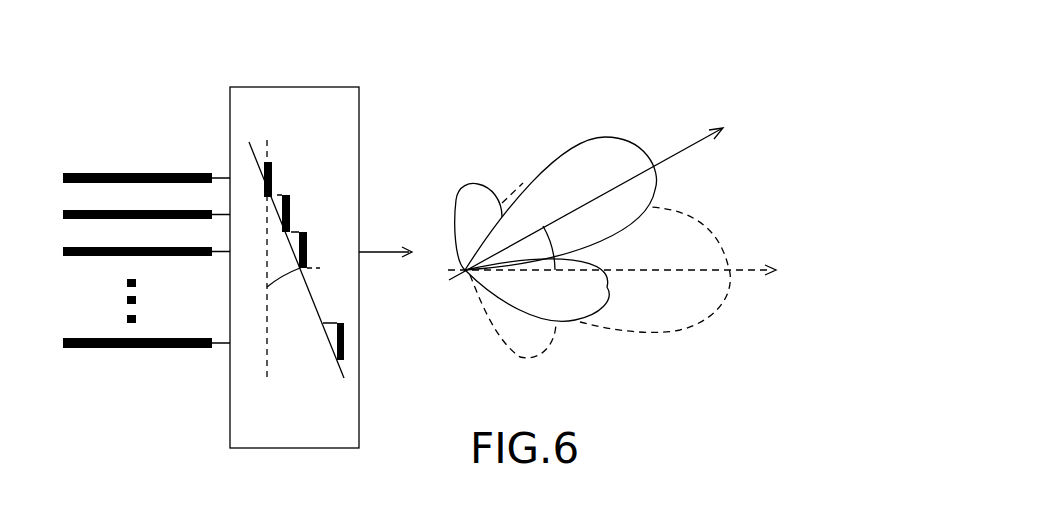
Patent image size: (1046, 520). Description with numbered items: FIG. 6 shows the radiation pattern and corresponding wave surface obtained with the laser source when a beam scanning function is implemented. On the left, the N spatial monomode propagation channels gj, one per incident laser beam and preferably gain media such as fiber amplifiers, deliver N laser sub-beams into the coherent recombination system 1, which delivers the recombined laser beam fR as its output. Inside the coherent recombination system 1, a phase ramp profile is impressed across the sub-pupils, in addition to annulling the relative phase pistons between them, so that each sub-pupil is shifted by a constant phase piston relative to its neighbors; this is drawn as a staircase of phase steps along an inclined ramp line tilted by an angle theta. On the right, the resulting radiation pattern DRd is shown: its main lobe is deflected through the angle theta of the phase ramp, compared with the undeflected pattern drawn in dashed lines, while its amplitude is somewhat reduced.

The coherent recombination system 1 is at (356, 114).
The spatial monomode propagation channels gj is at (127, 172).
The recombined laser beam fR is at (385, 242).
The radiation pattern DRd is at (510, 132).